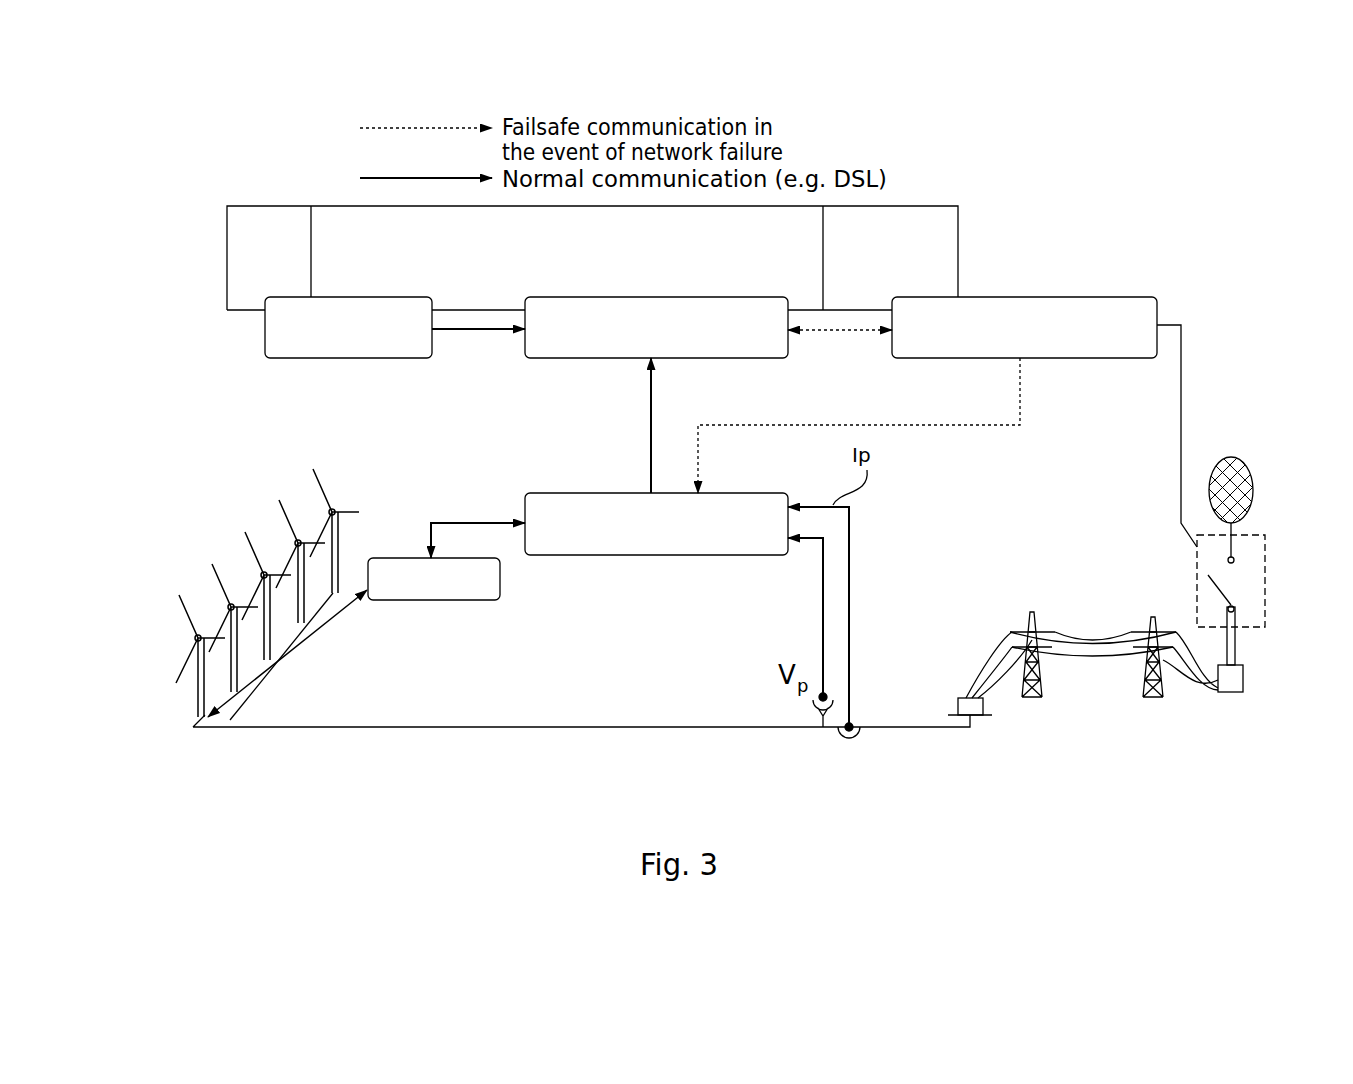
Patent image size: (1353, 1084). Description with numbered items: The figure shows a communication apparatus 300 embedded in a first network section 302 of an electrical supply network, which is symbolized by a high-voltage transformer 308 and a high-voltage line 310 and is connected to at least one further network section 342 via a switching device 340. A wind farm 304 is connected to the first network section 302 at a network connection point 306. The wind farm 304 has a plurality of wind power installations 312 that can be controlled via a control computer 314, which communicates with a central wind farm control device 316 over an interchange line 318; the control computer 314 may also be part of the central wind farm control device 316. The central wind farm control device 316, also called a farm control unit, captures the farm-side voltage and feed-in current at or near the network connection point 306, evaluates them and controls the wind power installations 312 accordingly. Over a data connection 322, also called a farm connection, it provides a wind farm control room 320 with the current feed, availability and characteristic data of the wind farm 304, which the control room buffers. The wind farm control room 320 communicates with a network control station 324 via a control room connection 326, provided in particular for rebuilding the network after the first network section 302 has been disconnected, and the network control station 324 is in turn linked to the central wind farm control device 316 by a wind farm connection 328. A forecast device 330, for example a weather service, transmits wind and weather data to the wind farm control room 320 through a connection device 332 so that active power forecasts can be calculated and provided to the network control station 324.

The communication apparatus 300 is at (1000, 242).
The first network section 302 is at (965, 773).
The wind farm 304 is at (368, 757).
The network connection point 306 is at (846, 757).
The high-voltage transformer 308 is at (987, 725).
The high-voltage line 310 is at (1112, 695).
The wind power installations 312 is at (158, 682).
The control computer 314 is at (432, 600).
The central wind farm control device 316 is at (632, 540).
The interchange line 318 is at (452, 520).
The wind farm control room 320 is at (590, 297).
The data connection 322 is at (651, 398).
The network control station 324 is at (1083, 302).
The control room connection 326 is at (843, 335).
The wind farm connection 328 is at (990, 425).
The forecast device 330 is at (361, 297).
The connection device 332 is at (470, 330).
The switching device 340 is at (1190, 575).
The further network section 342 is at (1234, 440).